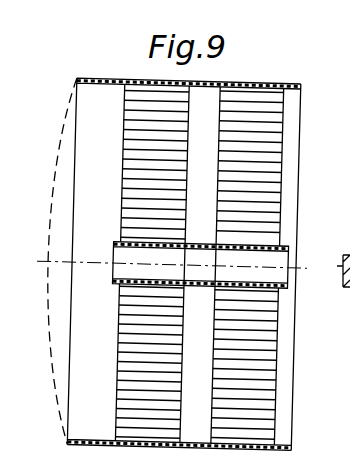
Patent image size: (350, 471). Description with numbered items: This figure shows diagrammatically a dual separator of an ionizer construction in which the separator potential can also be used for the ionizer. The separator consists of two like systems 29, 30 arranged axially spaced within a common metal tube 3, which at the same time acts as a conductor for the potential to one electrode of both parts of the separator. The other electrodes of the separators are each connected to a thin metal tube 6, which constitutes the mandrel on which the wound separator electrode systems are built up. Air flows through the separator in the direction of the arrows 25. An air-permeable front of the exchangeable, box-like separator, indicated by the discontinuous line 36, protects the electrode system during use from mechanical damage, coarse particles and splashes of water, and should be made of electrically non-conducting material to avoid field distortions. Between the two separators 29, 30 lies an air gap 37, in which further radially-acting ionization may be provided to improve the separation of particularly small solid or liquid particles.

The metal tube 3 is at (294, 83).
The thin metal tube 6 is at (288, 246).
The arrows 25 is at (45, 178).
The separator system 29 is at (114, 405).
The separator system 30 is at (277, 417).
The discontinuous line 36 is at (46, 242).
The air gap 37 is at (211, 101).